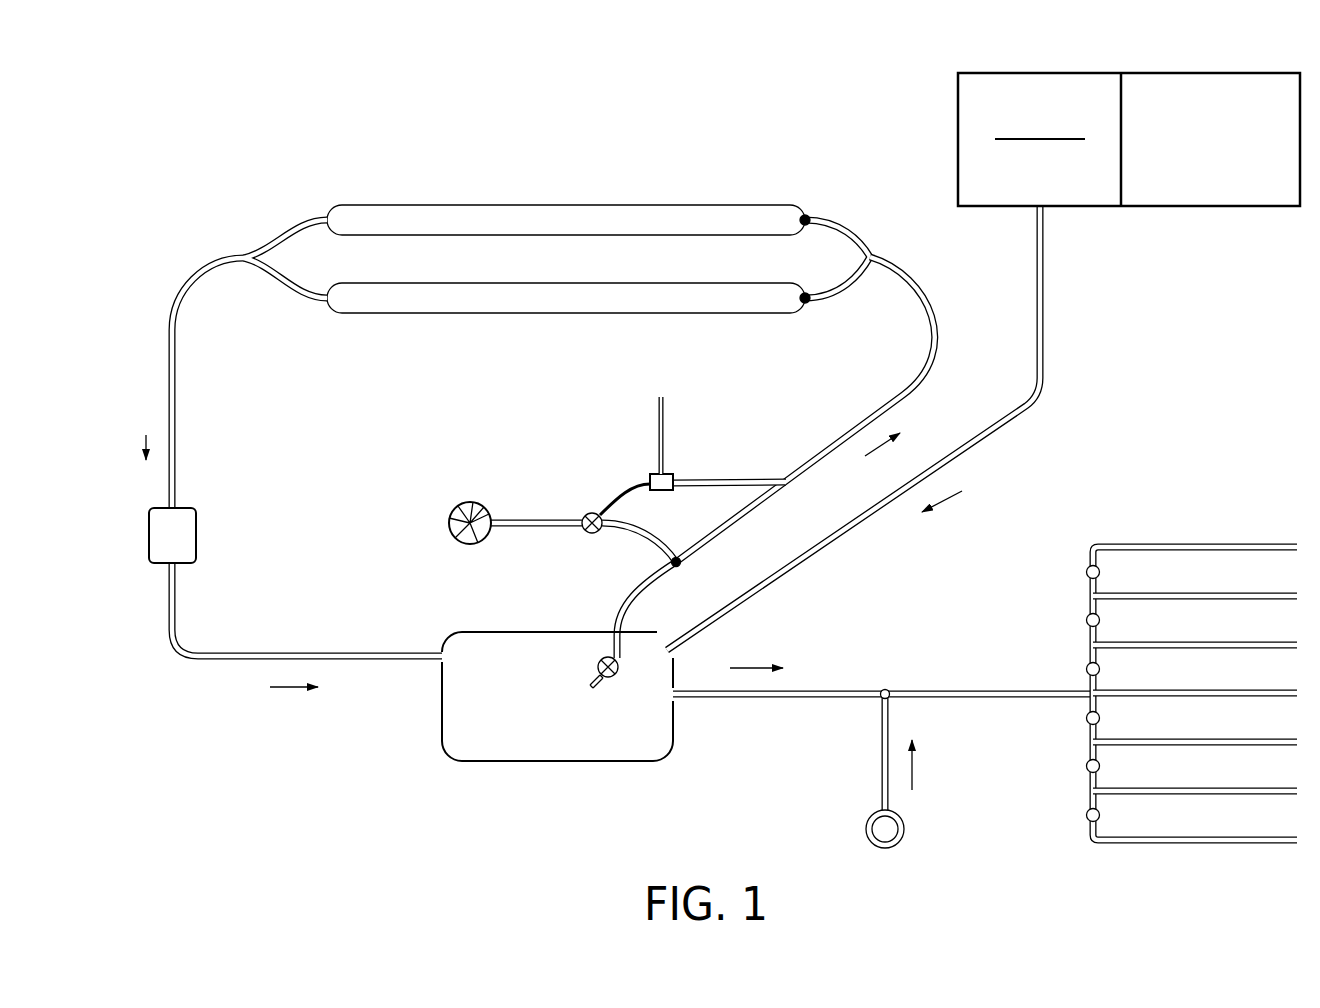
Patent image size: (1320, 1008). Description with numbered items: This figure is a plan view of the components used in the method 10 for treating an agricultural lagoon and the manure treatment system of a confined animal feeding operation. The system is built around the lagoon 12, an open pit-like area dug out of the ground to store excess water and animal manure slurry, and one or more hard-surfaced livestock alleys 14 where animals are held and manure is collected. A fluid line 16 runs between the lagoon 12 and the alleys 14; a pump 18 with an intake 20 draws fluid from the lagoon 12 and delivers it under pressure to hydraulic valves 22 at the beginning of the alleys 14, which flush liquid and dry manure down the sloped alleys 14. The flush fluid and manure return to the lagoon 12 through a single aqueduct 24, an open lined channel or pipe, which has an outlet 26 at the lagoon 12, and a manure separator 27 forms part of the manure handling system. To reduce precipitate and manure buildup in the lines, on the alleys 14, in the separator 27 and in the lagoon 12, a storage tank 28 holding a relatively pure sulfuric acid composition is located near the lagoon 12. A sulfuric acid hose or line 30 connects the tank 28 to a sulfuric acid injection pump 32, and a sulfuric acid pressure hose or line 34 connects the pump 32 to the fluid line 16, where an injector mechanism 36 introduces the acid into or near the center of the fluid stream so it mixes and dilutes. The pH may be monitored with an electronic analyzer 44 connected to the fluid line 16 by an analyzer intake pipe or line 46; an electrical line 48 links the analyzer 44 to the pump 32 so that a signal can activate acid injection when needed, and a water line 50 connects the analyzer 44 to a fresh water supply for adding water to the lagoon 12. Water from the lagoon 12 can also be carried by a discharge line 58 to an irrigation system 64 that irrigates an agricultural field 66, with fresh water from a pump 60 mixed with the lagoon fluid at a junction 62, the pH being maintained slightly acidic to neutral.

The method of treating agricultural lagoons and manure treatment systems 10 is at (1152, 395).
The lagoon 12 is at (520, 740).
The livestock alleys 14 is at (557, 214).
The fluid line 16 is at (851, 431).
The pump 18 is at (607, 651).
The intake 20 is at (594, 671).
The hydraulic valves 22 is at (808, 216).
The aqueduct 24 is at (170, 369).
The outlet 26 is at (458, 655).
The manure separator 27 is at (163, 540).
The storage tank 28 is at (458, 511).
The sulfuric acid hose or line 30 is at (514, 515).
The sulfuric acid injection pump 32 is at (587, 512).
The sulfuric acid pressure hose or line 34 is at (648, 526).
The injector mechanism 36 is at (688, 563).
The electronic analyzer 44 is at (674, 477).
The analyzer intake pipe or line 46 is at (735, 478).
The electrical line 48 is at (621, 489).
The water line 50 is at (658, 410).
The discharge line 58 is at (770, 701).
The pump 60 is at (904, 826).
The junction 62 is at (889, 686).
The irrigation system 64 is at (1194, 546).
The agricultural field 66 is at (1178, 766).